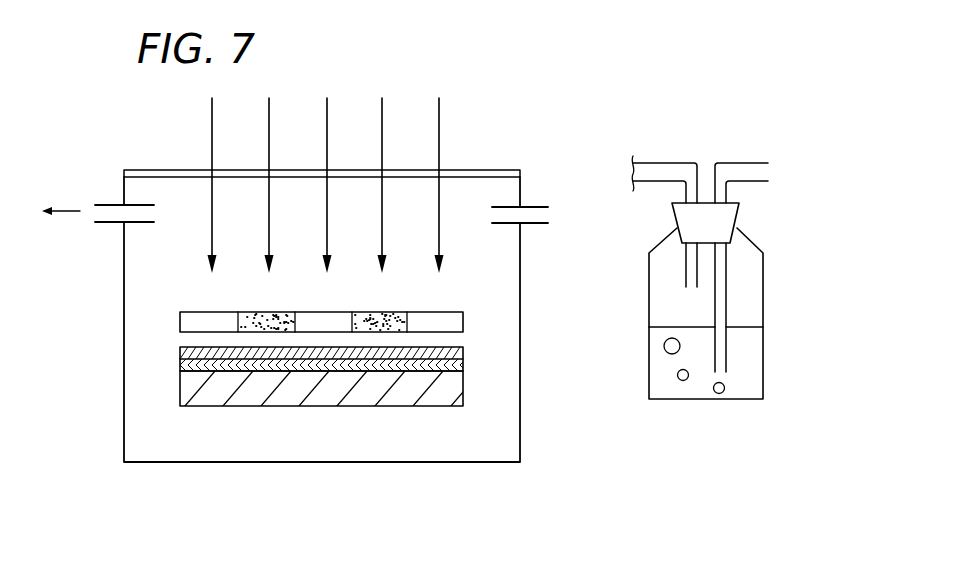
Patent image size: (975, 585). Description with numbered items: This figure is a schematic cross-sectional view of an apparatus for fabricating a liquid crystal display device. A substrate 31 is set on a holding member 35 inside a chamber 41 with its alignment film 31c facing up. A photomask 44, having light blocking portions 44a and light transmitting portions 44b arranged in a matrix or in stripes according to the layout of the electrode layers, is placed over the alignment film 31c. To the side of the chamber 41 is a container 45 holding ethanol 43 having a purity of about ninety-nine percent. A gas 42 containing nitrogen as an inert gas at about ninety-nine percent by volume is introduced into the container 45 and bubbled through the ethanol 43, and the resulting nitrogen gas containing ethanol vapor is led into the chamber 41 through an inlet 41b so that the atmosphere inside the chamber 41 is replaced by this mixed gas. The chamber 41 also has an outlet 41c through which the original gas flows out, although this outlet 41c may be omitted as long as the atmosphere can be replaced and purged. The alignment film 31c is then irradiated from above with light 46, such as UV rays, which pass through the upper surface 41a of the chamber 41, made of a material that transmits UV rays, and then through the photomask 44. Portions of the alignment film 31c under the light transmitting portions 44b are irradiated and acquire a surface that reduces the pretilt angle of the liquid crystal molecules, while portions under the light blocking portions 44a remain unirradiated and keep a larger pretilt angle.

The substrate 31 is at (344, 405).
The alignment film 31c is at (182, 357).
The holding member 35 is at (182, 389).
The chamber 41 is at (114, 263).
The upper surface 41a is at (184, 148).
The inlet 41b is at (541, 206).
The outlet 41c is at (110, 204).
The gas 42 is at (782, 170).
The ethanol 43 is at (727, 277).
The photomask 44 is at (387, 285).
The light blocking portions 44a is at (388, 312).
The light transmitting portions 44b is at (462, 313).
The container 45 is at (635, 327).
The light 46 is at (440, 128).